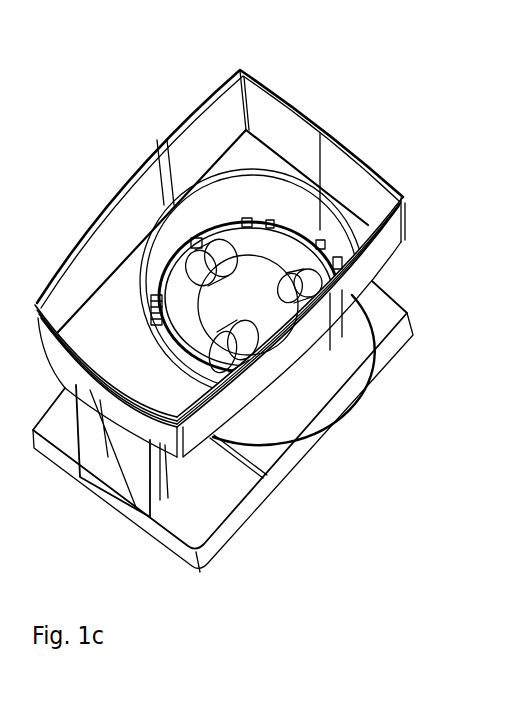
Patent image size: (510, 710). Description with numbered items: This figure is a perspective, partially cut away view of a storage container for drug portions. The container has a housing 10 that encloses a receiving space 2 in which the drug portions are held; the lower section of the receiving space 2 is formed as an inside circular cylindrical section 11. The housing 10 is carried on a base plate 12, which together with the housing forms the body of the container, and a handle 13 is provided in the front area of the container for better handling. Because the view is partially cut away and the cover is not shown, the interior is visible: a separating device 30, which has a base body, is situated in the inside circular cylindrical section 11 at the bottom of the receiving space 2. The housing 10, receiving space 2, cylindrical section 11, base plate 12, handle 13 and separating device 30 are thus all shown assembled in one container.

The receiving space 2 is at (120, 343).
The housing 10 is at (386, 257).
The inside circular cylindrical section 11 is at (332, 377).
The base plate 12 is at (383, 362).
The handle 13 is at (137, 485).
The separating device 30 is at (262, 270).